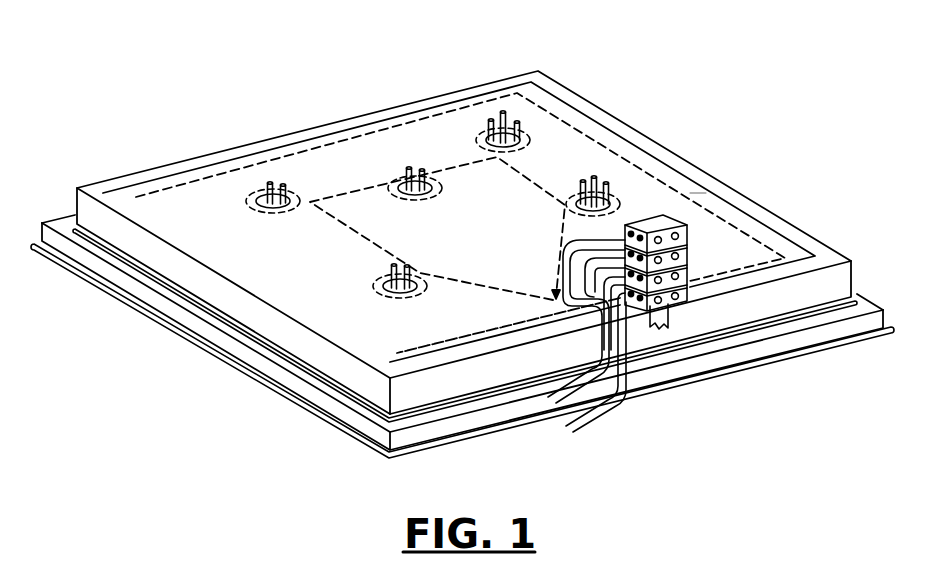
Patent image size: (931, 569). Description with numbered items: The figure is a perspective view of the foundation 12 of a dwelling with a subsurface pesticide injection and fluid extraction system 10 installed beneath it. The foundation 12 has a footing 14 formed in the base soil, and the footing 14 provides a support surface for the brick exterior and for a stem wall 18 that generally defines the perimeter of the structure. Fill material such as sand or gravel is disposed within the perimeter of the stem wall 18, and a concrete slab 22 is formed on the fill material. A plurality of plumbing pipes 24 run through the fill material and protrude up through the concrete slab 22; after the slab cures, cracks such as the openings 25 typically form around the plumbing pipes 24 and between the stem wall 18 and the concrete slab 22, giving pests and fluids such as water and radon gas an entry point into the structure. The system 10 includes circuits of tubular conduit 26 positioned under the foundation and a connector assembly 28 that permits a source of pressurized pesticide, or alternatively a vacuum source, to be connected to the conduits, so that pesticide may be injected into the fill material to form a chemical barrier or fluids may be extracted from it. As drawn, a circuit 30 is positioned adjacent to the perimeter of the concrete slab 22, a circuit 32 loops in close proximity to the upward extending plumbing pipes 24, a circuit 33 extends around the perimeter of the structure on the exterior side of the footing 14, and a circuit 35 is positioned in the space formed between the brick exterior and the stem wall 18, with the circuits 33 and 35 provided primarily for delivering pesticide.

The subsurface pesticide injection and fluid extraction system 10 is at (680, 107).
The foundation 12 is at (293, 131).
The footing 14 is at (210, 337).
The stem wall 18 is at (160, 260).
The concrete slab 22 is at (173, 192).
The plumbing pipes 24 is at (487, 127).
The openings 25 is at (260, 183).
The tubular conduit 26 is at (698, 193).
The connector assembly 28 is at (690, 267).
The circuit 30 is at (457, 337).
The circuit 32 is at (513, 292).
The circuit 33 is at (293, 402).
The circuit 35 is at (773, 325).